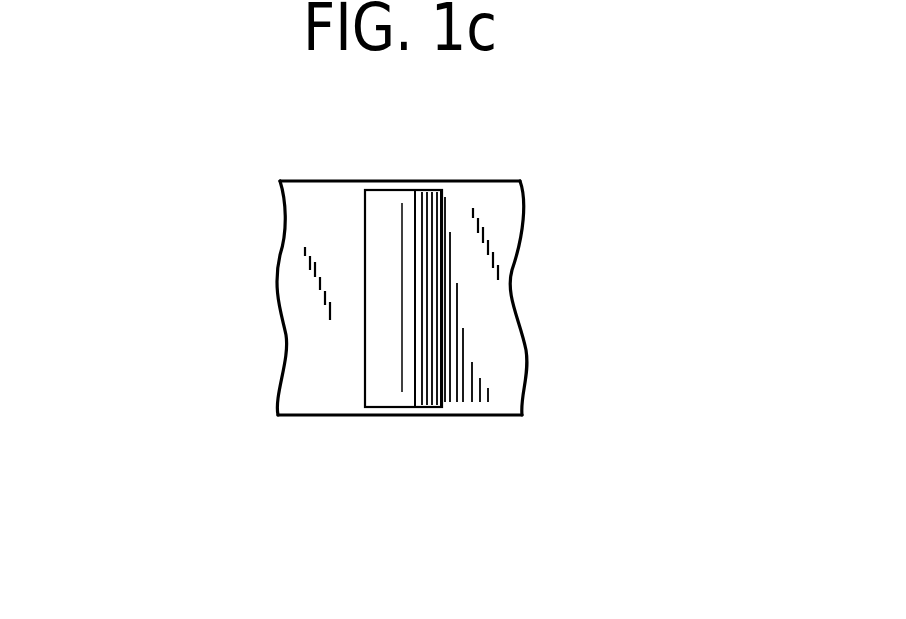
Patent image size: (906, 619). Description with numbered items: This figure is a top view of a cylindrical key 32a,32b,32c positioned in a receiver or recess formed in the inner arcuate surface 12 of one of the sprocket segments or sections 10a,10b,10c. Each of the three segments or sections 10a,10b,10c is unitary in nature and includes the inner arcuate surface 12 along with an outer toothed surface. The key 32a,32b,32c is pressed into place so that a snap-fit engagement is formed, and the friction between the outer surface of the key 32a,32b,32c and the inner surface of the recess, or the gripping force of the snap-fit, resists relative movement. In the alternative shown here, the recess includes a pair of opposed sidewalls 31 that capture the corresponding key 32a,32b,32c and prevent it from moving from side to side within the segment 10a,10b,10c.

The segments or sections 10a,10b,10c is at (658, 162).
The inner arcuate surface 12 is at (497, 302).
The opposed sidewalls 31 is at (405, 181).
The key 32a,32b,32c is at (378, 242).